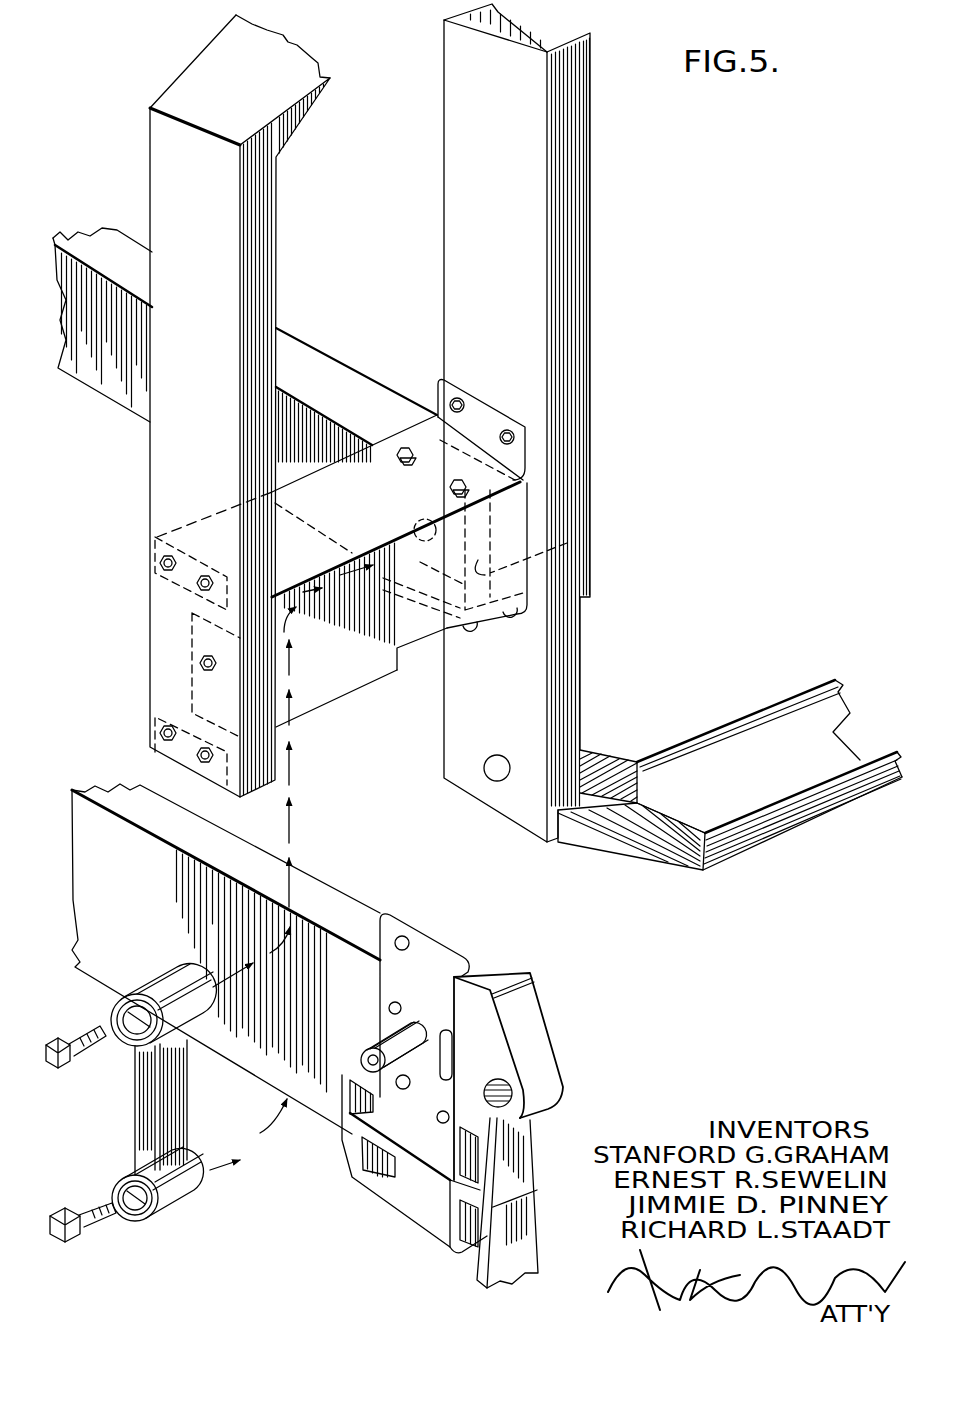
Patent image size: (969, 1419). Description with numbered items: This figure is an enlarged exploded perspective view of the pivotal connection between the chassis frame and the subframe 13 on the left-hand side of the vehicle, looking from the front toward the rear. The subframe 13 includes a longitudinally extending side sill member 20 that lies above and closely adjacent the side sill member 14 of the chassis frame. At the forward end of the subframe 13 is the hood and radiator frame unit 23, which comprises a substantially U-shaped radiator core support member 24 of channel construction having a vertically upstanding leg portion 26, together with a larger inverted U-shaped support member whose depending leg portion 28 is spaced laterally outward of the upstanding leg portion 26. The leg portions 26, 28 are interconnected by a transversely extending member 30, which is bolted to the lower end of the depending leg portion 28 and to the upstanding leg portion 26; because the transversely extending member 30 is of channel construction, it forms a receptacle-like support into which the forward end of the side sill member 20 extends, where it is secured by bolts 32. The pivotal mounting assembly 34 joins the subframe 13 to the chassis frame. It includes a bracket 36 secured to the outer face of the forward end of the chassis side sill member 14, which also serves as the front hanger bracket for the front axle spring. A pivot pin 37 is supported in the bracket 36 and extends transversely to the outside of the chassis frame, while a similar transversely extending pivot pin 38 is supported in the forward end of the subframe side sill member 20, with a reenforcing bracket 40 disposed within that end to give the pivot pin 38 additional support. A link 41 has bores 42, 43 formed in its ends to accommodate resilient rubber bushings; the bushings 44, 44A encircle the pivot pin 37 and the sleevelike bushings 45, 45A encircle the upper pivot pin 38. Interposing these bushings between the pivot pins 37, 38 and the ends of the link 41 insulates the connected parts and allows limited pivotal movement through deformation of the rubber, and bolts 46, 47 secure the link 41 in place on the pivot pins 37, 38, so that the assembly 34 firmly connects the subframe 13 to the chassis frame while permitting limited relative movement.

The subframe 13 is at (396, 384).
The side sill member 14 is at (325, 905).
The side sill member 20 is at (325, 378).
The hood and radiator frame unit 23 is at (200, 73).
The radiator core support member 24 is at (789, 820).
The upstanding leg portion 26 is at (460, 212).
The depending leg portion 28 is at (160, 455).
The transversely extending member 30 is at (327, 682).
The bolts 32 is at (452, 488).
The pivotal mounting assembly 34 is at (418, 654).
The bracket 36 is at (530, 1010).
The pivot pin 37 is at (370, 1042).
The pivot pin 38 is at (412, 521).
The reenforcing bracket 40 is at (590, 533).
The link 41 is at (177, 1108).
The bore 42 is at (198, 1222).
The bore 43 is at (129, 970).
The resilient bushing 44 is at (147, 1222).
The resilient bushing 44A is at (215, 1183).
The sleevelike rubber bushing 45 is at (112, 1015).
The sleevelike rubber bushing 45A is at (143, 990).
The bolt 46 is at (72, 1245).
The bolt 47 is at (62, 1070).